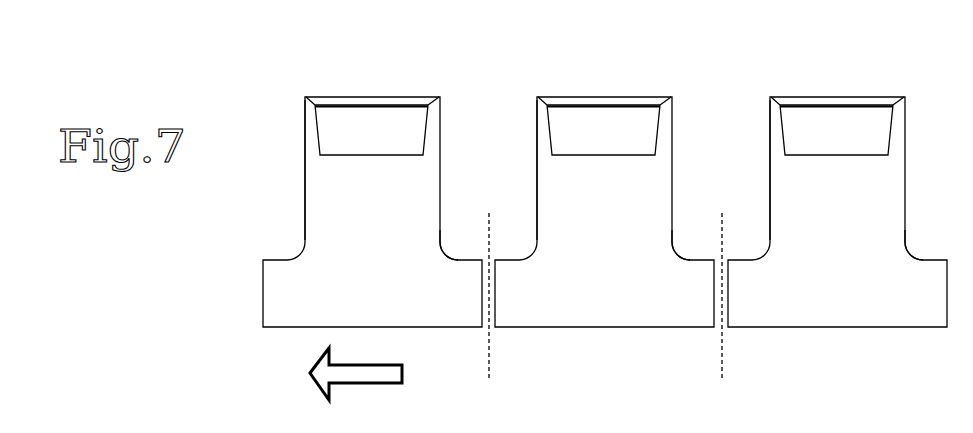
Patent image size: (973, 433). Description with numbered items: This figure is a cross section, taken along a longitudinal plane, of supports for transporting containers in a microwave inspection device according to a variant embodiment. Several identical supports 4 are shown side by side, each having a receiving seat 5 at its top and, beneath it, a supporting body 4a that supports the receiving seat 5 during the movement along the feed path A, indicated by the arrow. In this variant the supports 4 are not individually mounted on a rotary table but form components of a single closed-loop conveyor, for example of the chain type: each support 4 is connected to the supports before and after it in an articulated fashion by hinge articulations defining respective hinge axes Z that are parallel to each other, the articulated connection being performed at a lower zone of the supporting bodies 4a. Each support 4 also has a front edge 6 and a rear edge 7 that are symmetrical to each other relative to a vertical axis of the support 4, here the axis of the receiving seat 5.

The support 4 is at (386, 82).
The supporting body 4a is at (412, 192).
The receiving seat 5 is at (305, 116).
The front edge 6 is at (305, 208).
The rear edge 7 is at (440, 215).
The hinge axis Z is at (489, 360).
The feed path A is at (367, 385).